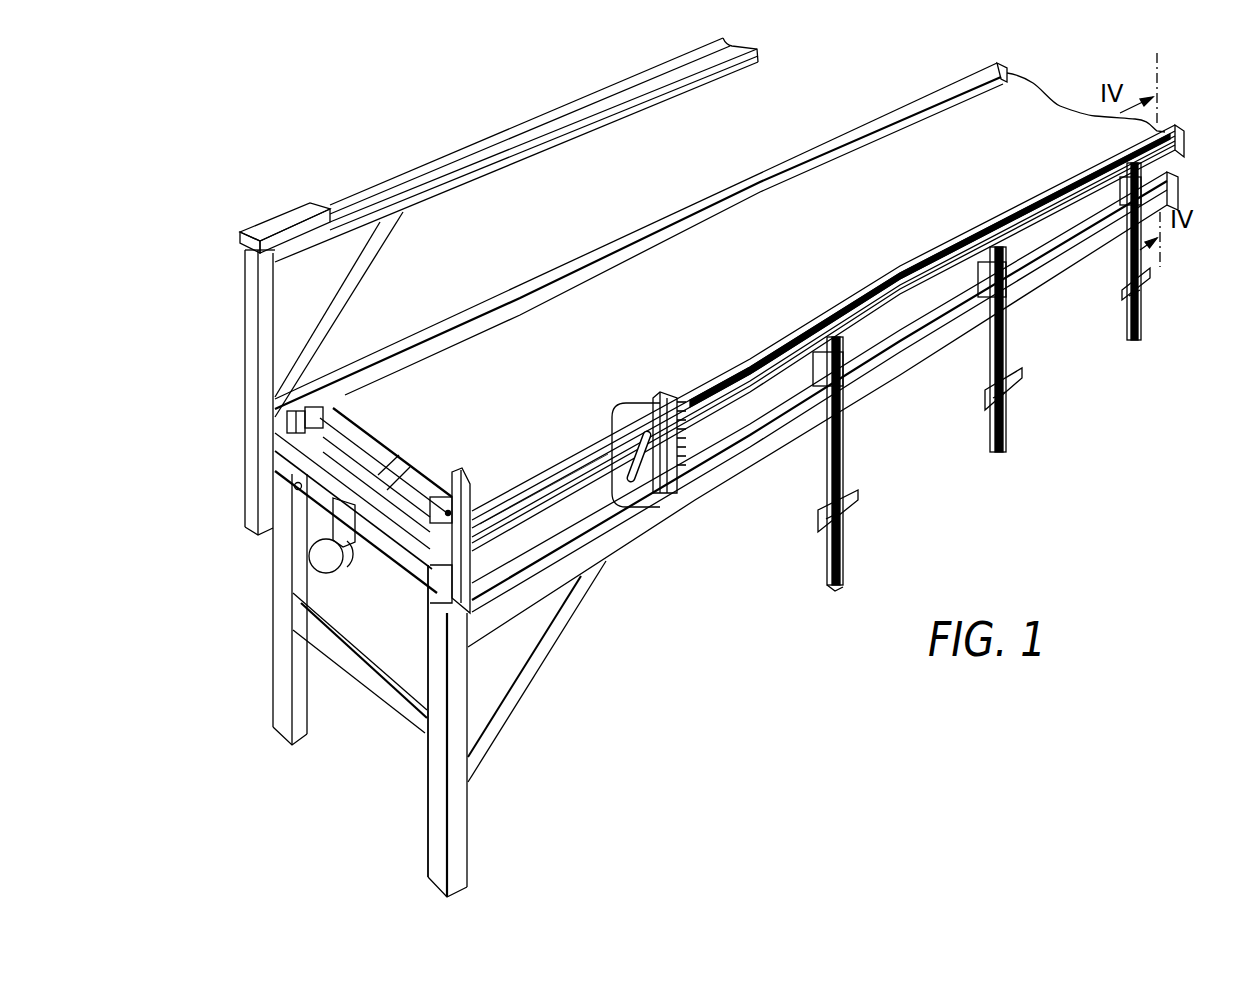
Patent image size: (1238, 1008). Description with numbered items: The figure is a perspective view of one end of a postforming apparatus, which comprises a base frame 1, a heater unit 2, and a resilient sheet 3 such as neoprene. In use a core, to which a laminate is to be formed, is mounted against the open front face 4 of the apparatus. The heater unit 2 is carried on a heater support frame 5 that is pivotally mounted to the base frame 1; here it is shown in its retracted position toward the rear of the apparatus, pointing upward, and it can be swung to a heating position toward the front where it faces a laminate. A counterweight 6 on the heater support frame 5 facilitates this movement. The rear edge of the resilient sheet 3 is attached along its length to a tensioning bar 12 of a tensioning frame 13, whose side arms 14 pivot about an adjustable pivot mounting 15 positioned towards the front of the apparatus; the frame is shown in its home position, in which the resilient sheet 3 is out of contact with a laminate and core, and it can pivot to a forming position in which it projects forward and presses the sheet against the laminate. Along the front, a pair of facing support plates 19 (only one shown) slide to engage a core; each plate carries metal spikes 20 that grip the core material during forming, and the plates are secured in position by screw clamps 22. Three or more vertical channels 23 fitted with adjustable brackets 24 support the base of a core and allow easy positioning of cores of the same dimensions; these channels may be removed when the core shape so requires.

The base frame 1 is at (567, 672).
The heater unit 2 is at (397, 142).
The resilient sheet 3 is at (762, 296).
The open front face 4 is at (893, 318).
The heater support frame 5 is at (250, 336).
The counterweight 6 is at (322, 562).
The tensioning bar 12 is at (553, 277).
The tensioning frame 13 is at (290, 430).
The side arms 14 is at (423, 540).
The adjustable pivot mounting 15 is at (433, 607).
The support plates 19 is at (627, 503).
The metal spikes 20 is at (683, 450).
The screw clamps 22 is at (607, 490).
The vertical channels 23 is at (830, 467).
The adjustable brackets 24 is at (822, 522).